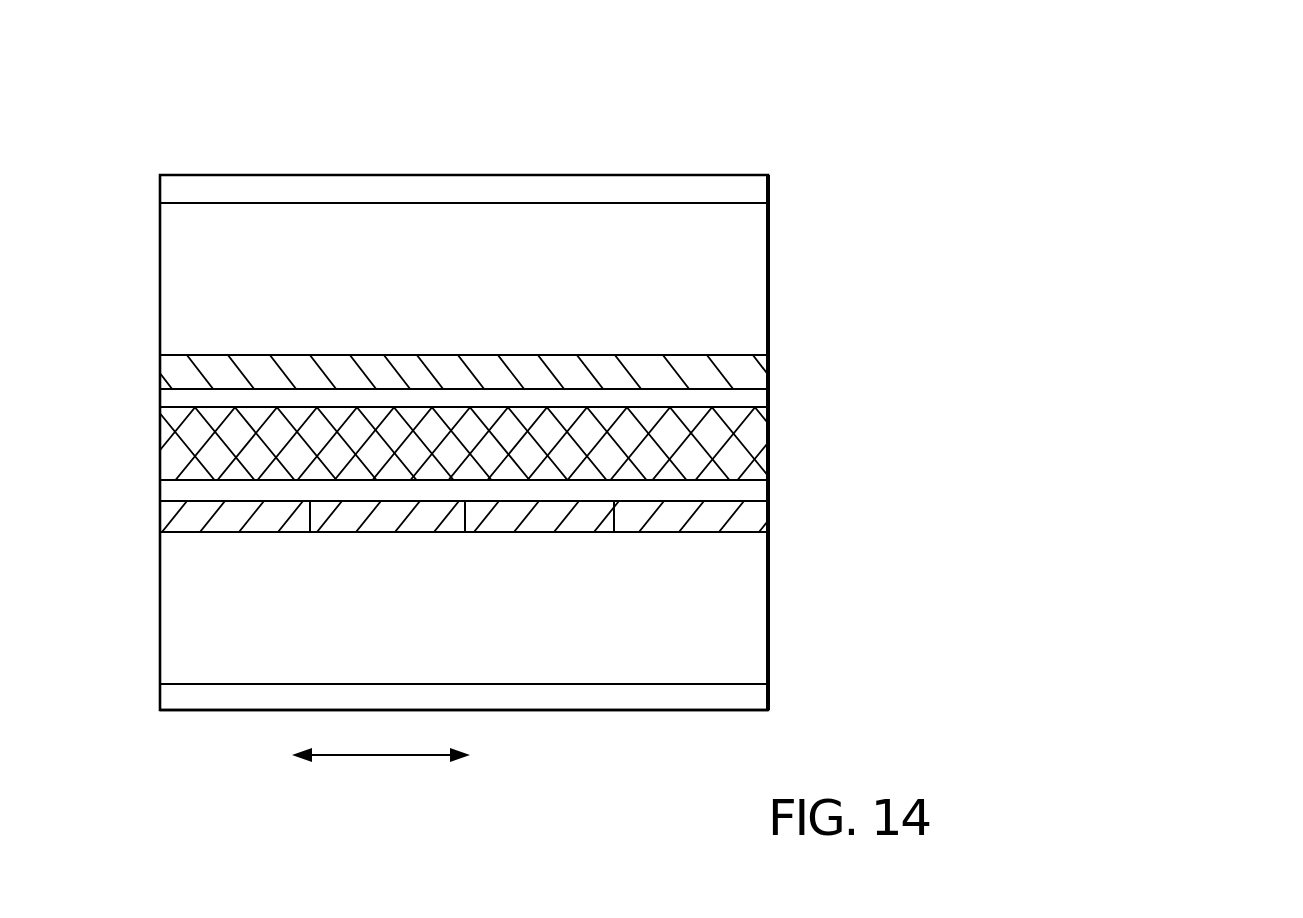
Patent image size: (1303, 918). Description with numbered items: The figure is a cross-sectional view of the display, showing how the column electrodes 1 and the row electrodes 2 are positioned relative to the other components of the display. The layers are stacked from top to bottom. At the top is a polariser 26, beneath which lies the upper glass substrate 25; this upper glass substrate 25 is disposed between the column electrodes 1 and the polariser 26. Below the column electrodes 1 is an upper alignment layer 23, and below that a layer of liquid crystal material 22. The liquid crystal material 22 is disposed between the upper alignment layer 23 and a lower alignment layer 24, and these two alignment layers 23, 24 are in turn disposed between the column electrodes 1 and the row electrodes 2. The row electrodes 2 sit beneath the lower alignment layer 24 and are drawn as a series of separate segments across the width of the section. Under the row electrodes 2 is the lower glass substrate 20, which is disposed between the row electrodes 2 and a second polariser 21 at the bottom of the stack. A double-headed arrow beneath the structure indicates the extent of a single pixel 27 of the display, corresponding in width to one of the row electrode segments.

The polariser 26 is at (783, 164).
The upper glass substrate 25 is at (783, 241).
The column electrodes 1 is at (781, 343).
The upper alignment layer 23 is at (783, 379).
The liquid crystal material 22 is at (784, 433).
The lower alignment layer 24 is at (786, 478).
The row electrodes 2 is at (787, 510).
The lower glass substrate 20 is at (787, 587).
The polariser 21 is at (786, 685).
The pixel 27 is at (381, 789).